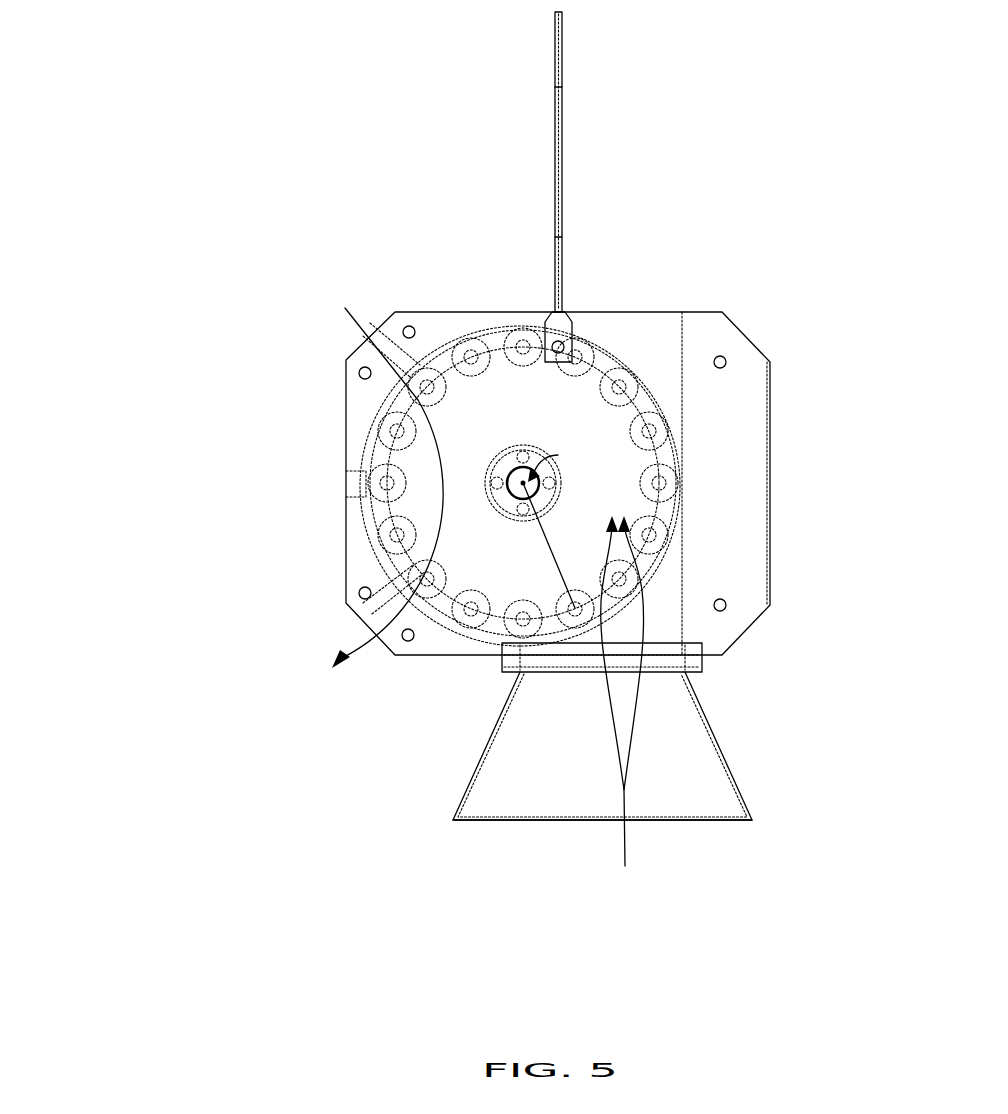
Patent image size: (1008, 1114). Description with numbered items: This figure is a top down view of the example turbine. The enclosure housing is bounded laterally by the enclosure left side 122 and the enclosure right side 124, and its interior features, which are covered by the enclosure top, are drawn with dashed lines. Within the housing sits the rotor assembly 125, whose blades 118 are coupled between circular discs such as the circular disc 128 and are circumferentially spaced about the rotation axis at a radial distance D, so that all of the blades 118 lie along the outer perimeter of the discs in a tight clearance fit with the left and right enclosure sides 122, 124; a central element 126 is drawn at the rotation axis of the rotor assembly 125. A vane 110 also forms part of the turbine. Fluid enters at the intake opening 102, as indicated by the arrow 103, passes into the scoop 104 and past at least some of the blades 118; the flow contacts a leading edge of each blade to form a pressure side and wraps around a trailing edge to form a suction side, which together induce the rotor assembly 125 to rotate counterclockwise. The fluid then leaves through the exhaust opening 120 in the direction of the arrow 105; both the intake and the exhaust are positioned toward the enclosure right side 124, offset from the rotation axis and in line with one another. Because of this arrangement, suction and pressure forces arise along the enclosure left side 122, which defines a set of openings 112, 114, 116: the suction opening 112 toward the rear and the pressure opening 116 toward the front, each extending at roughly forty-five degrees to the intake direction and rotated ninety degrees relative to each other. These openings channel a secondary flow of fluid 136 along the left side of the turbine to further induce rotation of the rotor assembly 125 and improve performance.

The intake opening 102 is at (561, 827).
The arrow 103 is at (623, 705).
The scoop 104 is at (722, 745).
The arrow 105 is at (648, 310).
The vane 110 is at (562, 146).
The suction opening 112 is at (132, 329).
The opening 114 is at (330, 486).
The pressure opening 116 is at (139, 632).
The blades 118 is at (578, 336).
The exhaust opening 120 is at (671, 309).
The enclosure left side 122 is at (346, 393).
The enclosure right side 124 is at (770, 490).
The rotor assembly 125 is at (625, 468).
The hub 126 is at (510, 460).
The circular disc 128 is at (672, 505).
The secondary flow of fluid 136 is at (382, 476).